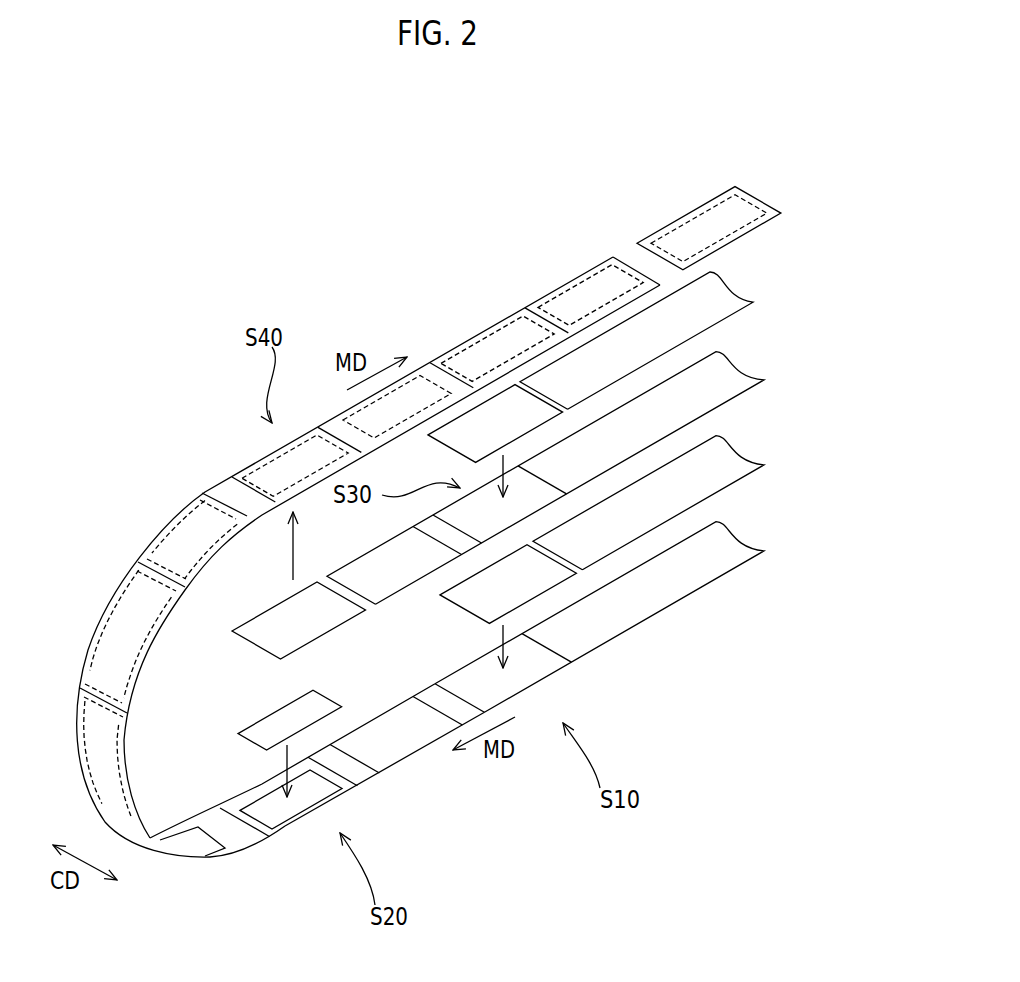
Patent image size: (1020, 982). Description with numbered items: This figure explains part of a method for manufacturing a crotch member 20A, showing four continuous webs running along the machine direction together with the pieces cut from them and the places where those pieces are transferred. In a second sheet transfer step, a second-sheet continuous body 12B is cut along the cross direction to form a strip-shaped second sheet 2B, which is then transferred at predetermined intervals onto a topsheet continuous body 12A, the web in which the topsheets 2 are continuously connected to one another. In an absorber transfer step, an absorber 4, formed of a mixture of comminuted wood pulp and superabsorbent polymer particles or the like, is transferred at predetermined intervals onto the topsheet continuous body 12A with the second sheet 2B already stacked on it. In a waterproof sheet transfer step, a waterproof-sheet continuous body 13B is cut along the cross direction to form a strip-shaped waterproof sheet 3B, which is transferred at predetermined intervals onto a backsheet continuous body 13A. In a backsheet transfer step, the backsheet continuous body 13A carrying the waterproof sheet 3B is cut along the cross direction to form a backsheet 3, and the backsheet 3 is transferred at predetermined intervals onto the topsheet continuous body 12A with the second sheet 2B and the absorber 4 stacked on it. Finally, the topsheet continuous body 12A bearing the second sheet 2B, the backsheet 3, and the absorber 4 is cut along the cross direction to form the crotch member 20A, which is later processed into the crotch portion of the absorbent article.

The topsheet 2 is at (405, 740).
The backsheet 3 is at (310, 620).
The absorber 4 is at (260, 735).
The second sheet 2B is at (473, 603).
The waterproof sheet 3B is at (457, 438).
The topsheet continuous body 12A is at (670, 588).
The second-sheet continuous body 12B is at (727, 462).
The backsheet continuous body 13A is at (724, 378).
The waterproof-sheet continuous body 13B is at (717, 294).
The crotch member 20A is at (693, 203).